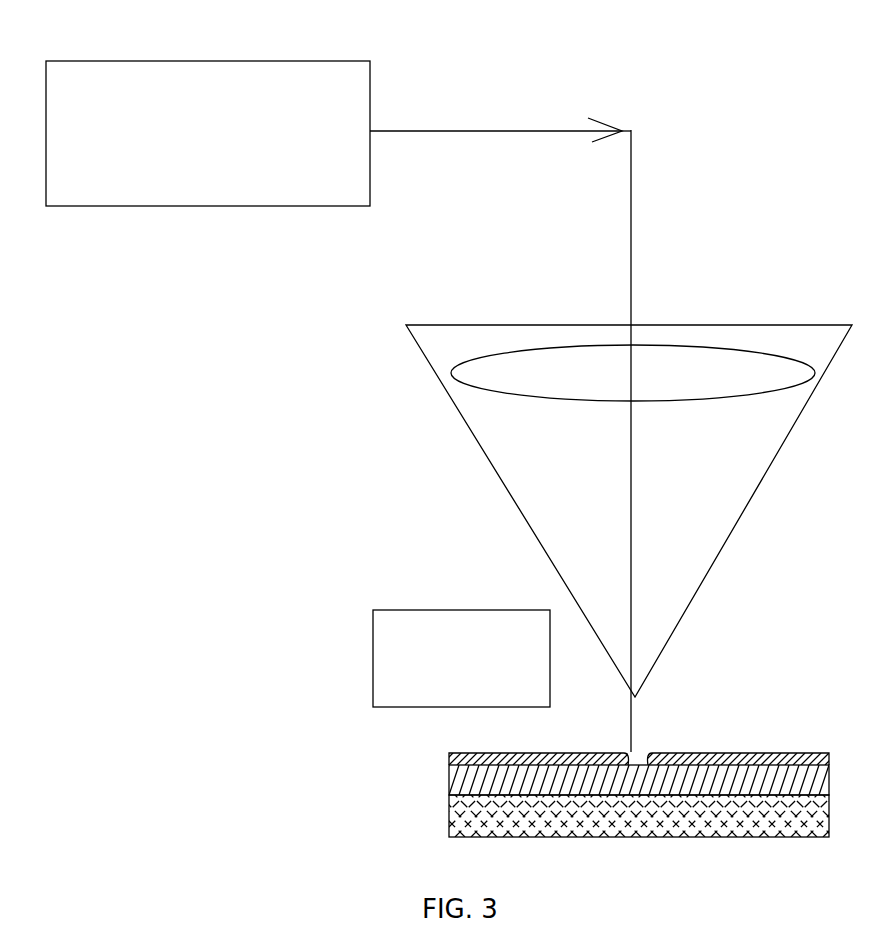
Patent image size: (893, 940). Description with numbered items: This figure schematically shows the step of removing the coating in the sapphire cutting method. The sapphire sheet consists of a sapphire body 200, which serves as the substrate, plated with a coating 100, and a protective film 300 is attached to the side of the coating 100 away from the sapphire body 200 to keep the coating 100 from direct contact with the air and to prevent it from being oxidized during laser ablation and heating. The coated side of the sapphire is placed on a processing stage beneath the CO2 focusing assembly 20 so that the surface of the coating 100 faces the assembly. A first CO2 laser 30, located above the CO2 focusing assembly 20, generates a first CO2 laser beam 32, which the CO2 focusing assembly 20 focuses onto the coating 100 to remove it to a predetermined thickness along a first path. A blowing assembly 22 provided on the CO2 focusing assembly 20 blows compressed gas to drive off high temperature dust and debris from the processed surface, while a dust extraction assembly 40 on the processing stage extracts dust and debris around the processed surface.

The first CO2 laser 30 is at (316, 95).
The first CO2 laser beam 32 is at (631, 168).
The CO2 focusing assembly 20 is at (497, 381).
The blowing assembly 22 is at (512, 497).
The dust extraction assembly 40 is at (472, 658).
The protective film 300 is at (468, 760).
The coating 100 is at (466, 790).
The sapphire body 200 is at (462, 826).